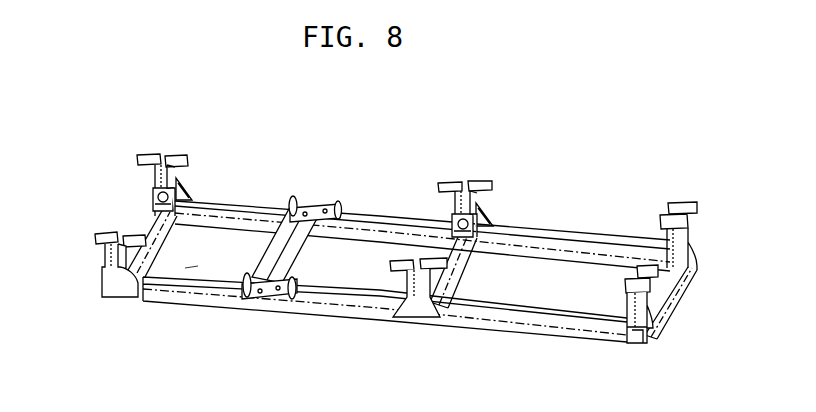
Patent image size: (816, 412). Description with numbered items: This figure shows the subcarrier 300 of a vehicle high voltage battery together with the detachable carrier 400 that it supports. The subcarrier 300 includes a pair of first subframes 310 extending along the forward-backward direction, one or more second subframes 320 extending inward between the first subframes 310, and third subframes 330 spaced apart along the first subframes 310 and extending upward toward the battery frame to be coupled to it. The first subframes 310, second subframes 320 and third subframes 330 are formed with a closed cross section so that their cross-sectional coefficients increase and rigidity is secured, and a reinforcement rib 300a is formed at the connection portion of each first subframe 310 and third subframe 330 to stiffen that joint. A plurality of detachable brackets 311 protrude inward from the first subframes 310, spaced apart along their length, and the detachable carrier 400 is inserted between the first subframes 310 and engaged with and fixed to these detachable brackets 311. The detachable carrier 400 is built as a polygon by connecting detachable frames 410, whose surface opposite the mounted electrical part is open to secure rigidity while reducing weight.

The subcarrier 300 is at (545, 229).
The reinforcement rib 300a is at (181, 189).
The first subframe 310 is at (334, 312).
The detachable bracket 311 is at (151, 194).
The second subframe 320 is at (662, 283).
The third subframe 330 is at (112, 250).
The detachable carrier 400 is at (262, 250).
The detachable frame 410 is at (185, 267).